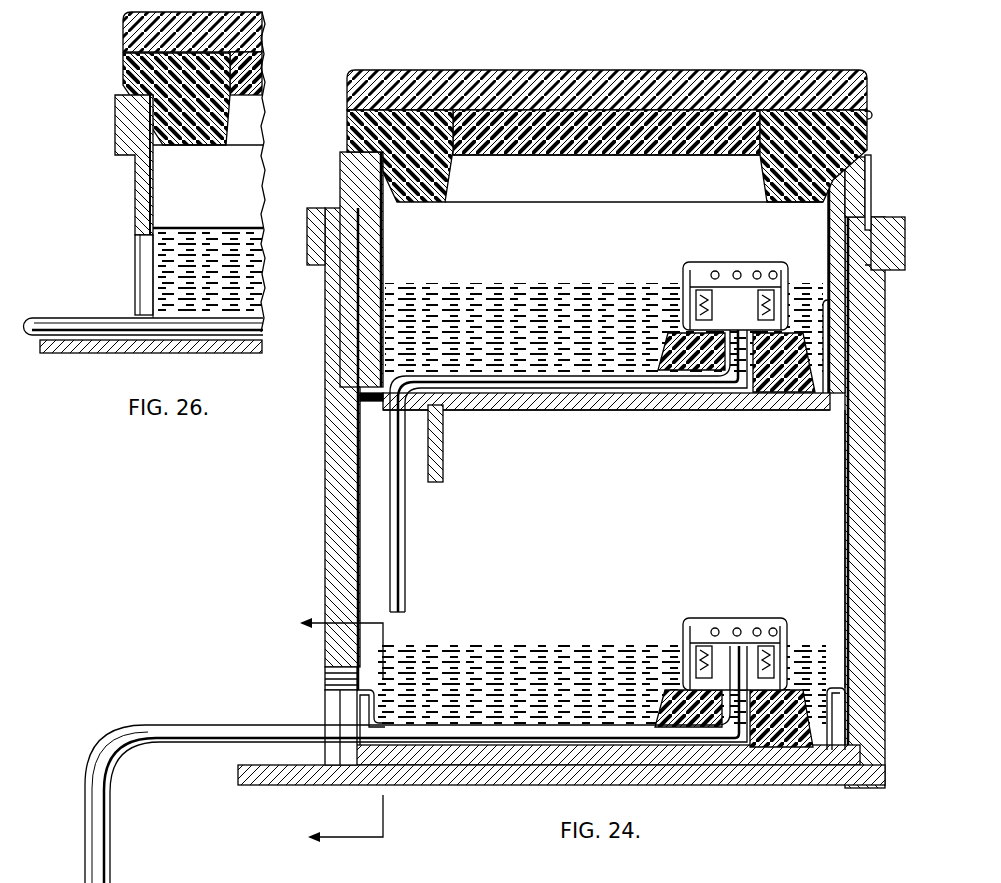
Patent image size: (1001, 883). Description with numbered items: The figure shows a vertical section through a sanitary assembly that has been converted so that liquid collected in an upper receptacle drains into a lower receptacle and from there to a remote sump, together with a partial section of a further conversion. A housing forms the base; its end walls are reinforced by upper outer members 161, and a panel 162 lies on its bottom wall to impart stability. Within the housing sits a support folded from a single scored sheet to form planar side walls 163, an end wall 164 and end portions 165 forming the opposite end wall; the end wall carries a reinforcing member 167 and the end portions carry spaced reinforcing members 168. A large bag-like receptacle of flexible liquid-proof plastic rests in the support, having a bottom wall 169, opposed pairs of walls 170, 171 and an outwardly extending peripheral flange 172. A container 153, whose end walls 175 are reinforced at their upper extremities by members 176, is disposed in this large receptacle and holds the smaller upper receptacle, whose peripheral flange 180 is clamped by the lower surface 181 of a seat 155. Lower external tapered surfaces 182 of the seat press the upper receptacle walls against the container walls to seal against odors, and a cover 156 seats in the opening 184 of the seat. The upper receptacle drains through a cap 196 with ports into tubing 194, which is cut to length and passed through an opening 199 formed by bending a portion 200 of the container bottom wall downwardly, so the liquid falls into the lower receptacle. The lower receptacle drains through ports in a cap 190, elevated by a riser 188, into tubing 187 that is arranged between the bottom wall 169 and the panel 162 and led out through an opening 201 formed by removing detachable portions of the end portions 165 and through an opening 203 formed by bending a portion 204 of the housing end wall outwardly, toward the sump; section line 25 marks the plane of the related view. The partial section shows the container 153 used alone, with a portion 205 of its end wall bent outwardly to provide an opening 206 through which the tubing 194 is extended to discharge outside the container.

In FIG. 24, the section line 25 is at (327, 731).
In FIG. 26, the container 153 is at (134, 201).
In FIG. 24, the seat 155 is at (346, 132).
In FIG. 24, the cover 156 is at (345, 72).
In FIG. 24, the upper outer members 161 is at (318, 262).
In FIG. 24, the panel 162 is at (712, 760).
In FIG. 24, the side walls 163 is at (830, 512).
In FIG. 24, the end wall 164 is at (853, 553).
In FIG. 24, the end portions 165 is at (348, 462).
In FIG. 24, the reinforcing member 167 is at (840, 715).
In FIG. 24, the reinforcing members 168 is at (366, 710).
In FIG. 24, the bottom wall 169 is at (452, 708).
In FIG. 24, the walls 170 is at (352, 506).
In FIG. 24, the walls 171 is at (826, 435).
In FIG. 24, the peripheral flange 172 is at (903, 228).
In FIG. 24, the end walls 175 is at (370, 312).
In FIG. 24, the reinforcing members 176 is at (356, 190).
In FIG. 24, the peripheral flange 180 is at (872, 165).
In FIG. 24, the lower surface 181 is at (871, 124).
In FIG. 24, the lower external tapered surfaces 182 is at (405, 193).
In FIG. 24, the opening 184 is at (527, 192).
In FIG. 24, the tubing 187 is at (555, 736).
In FIG. 24, the riser 188 is at (780, 745).
In FIG. 24, the cap 190 is at (718, 618).
In FIG. 24, the tubing 194 is at (598, 379).
In FIG. 26, the tubing 194 is at (213, 326).
In FIG. 24, the cap 196 is at (725, 262).
In FIG. 24, the opening 199 is at (378, 398).
In FIG. 24, the bent portion 200 is at (440, 447).
In FIG. 24, the opening 201 is at (348, 712).
In FIG. 24, the opening 203 is at (335, 692).
In FIG. 24, the bent portion 204 is at (300, 772).
In FIG. 24, the bent portion 205 is at (370, 362).
In FIG. 26, the bent portion 205 is at (108, 346).
In FIG. 26, the opening 206 is at (144, 289).